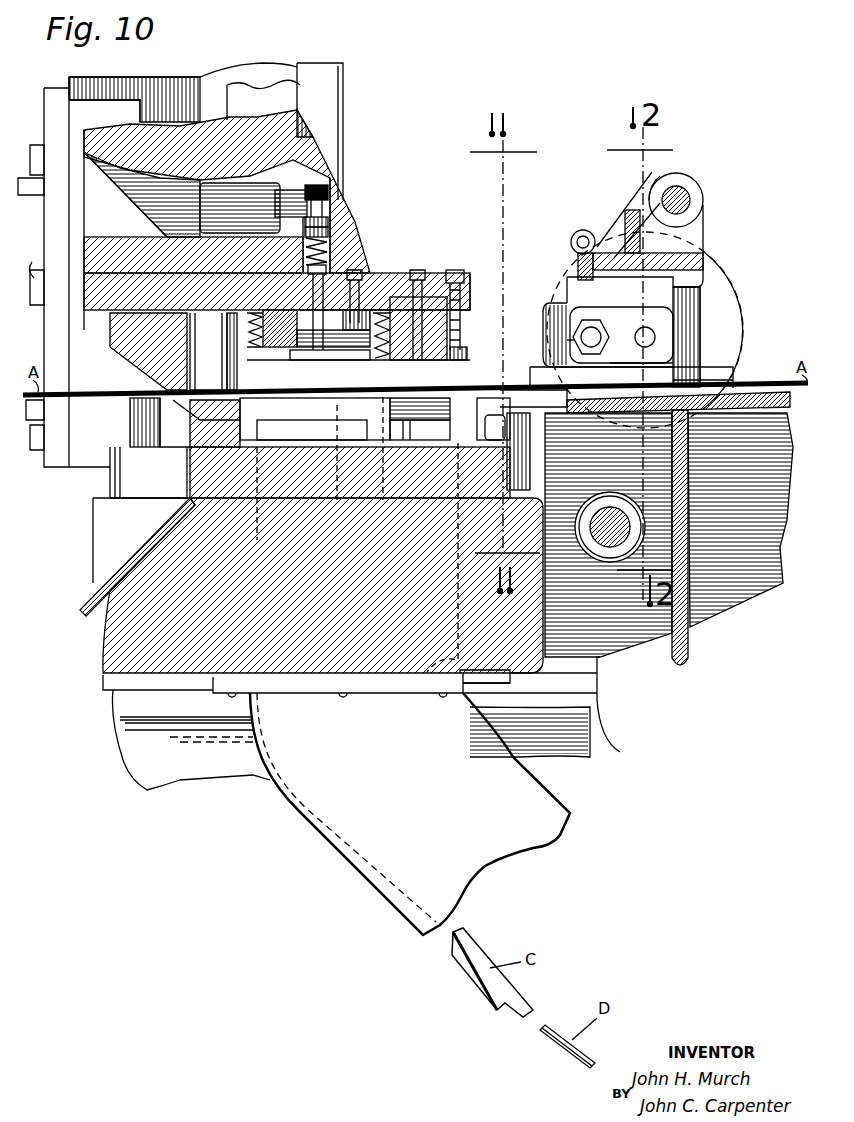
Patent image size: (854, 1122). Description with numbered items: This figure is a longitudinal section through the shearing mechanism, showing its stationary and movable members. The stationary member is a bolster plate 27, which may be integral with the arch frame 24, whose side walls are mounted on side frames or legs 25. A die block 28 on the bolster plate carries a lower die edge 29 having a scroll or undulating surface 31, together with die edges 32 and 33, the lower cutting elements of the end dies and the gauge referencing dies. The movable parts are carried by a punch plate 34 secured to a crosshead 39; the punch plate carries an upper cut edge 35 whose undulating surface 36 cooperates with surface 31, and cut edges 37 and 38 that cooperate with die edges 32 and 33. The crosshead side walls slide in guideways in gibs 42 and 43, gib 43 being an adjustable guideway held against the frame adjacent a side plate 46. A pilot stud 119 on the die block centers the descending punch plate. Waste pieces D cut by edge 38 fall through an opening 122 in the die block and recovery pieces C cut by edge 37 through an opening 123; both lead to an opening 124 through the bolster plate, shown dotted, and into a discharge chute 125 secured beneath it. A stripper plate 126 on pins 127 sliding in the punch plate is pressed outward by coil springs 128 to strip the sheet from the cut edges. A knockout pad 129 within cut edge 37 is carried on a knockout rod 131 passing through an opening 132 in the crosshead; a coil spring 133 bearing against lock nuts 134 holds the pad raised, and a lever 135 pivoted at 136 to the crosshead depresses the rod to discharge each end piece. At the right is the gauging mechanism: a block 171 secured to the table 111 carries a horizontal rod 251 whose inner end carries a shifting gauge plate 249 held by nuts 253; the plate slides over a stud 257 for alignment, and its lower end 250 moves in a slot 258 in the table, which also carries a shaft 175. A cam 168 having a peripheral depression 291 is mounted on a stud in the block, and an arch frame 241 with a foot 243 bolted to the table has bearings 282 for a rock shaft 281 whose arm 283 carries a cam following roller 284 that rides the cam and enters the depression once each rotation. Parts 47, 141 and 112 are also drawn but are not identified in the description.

The side plate 46 is at (60, 95).
The bolt 47 is at (44, 280).
The gib 42 is at (97, 105).
The gib 43 is at (290, 70).
The arch frame 24 is at (336, 78).
The crosshead 39 is at (312, 118).
The pivot 136 is at (293, 193).
The lever 135 is at (318, 196).
The lock nuts 134 is at (330, 222).
The coil spring 133 is at (330, 232).
The opening 132 is at (330, 248).
The knockout rod 131 is at (330, 262).
The cut edge 37 is at (398, 290).
The punch plate 34 is at (405, 292).
The pins 127 is at (462, 302).
The knockout pad 129 is at (340, 360).
The upper cut edge 35 is at (114, 356).
The scroll or undulating surface 36 is at (192, 352).
The coil springs 128 is at (250, 345).
The opening 123 is at (372, 360).
The cut edge 38 is at (447, 331).
The stripper plate 126 is at (462, 362).
The pilot stud 119 is at (140, 411).
The scroll or undulating surface 31 is at (186, 424).
The opening 122 is at (298, 422).
The die edge 32 is at (288, 424).
The die edge 33 is at (470, 408).
The lower die edge 29 is at (186, 442).
The die block 28 is at (205, 488).
The bolster plate 27 is at (117, 660).
The plate 141 is at (95, 622).
The discharge chute 125 is at (552, 845).
The opening 124 is at (415, 700).
The side frames or legs 25 is at (605, 737).
The flange 112 is at (580, 666).
The shaft 175 is at (600, 548).
The table 111 is at (738, 600).
The slot 258 is at (615, 386).
The rock shaft 281 is at (690, 196).
The bearings 282 is at (696, 232).
The arm 283 is at (605, 222).
The cam following roller 284 is at (573, 233).
The frame 241 is at (632, 210).
The foot 243 is at (575, 285).
The cam 168 is at (710, 273).
The depression 291 is at (556, 315).
The shifting gauge plate 249 is at (642, 318).
The stud 257 is at (656, 337).
The nuts 253 is at (581, 338).
The horizontal rod 251 is at (590, 340).
The block 171 is at (632, 373).
The lower end 250 is at (672, 378).